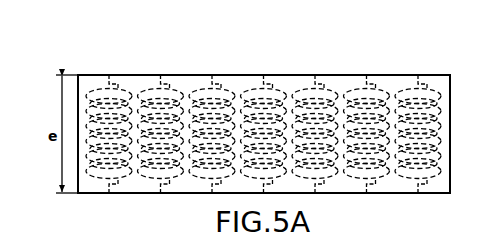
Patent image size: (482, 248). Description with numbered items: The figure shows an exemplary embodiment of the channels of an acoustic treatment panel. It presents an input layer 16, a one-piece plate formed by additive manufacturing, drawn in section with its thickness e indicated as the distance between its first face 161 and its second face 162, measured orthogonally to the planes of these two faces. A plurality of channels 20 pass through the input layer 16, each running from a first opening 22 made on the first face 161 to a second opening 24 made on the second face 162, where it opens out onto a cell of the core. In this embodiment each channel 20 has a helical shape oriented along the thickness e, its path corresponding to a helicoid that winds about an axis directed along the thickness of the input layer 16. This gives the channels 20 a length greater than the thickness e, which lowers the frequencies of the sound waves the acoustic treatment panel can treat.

The input layer 16 is at (92, 71).
The channel 20 is at (148, 88).
The first opening 22 is at (211, 87).
The second opening 24 is at (160, 194).
The first face 161 is at (291, 73).
The second face 162 is at (379, 196).